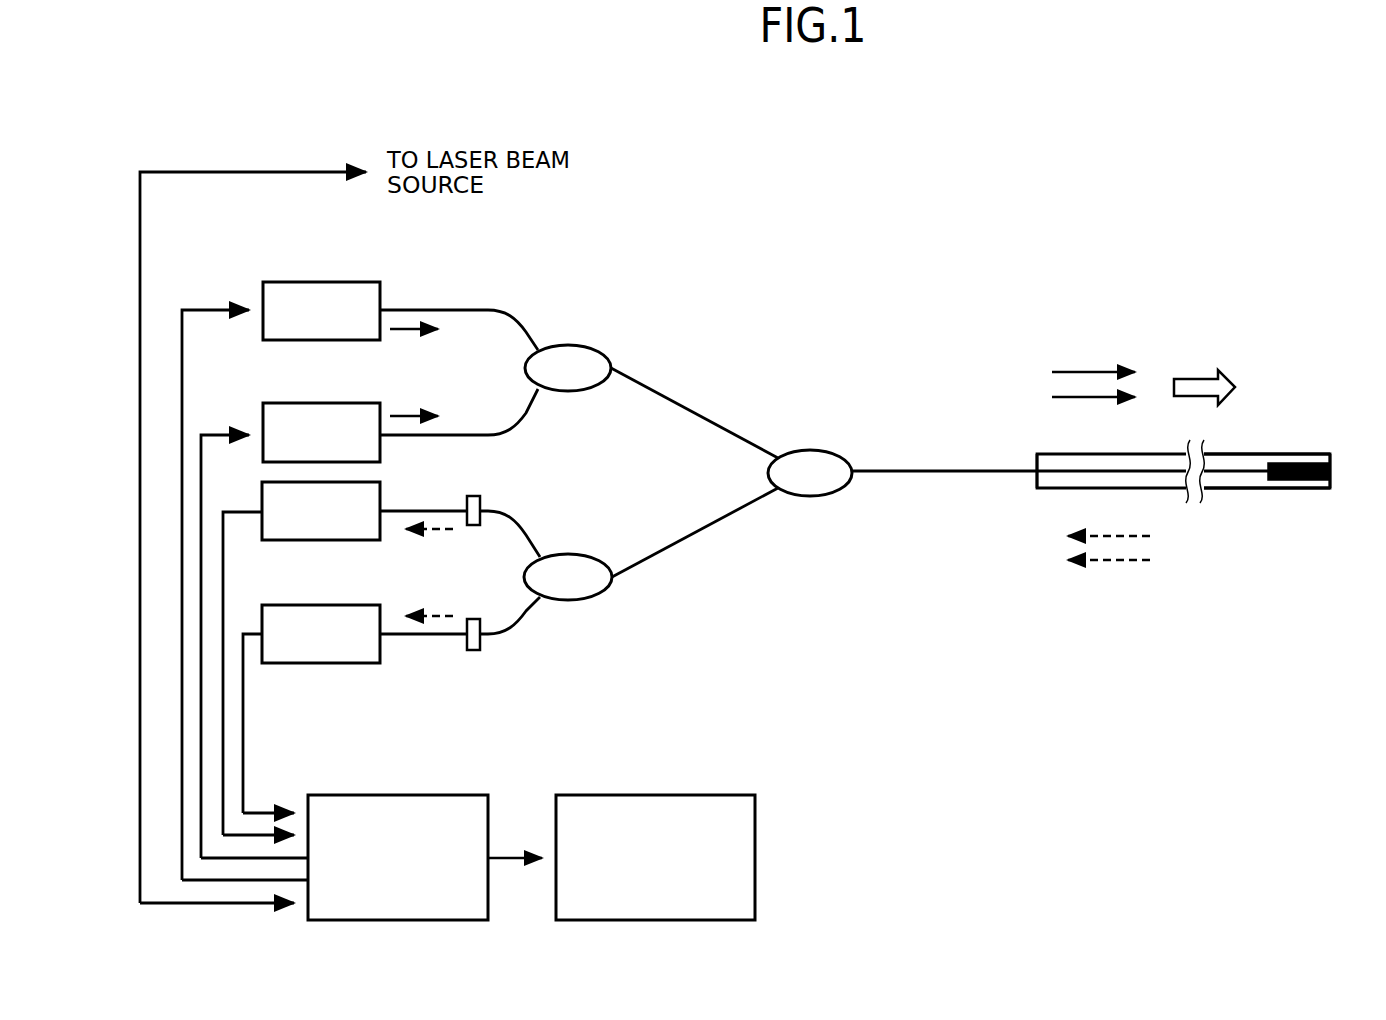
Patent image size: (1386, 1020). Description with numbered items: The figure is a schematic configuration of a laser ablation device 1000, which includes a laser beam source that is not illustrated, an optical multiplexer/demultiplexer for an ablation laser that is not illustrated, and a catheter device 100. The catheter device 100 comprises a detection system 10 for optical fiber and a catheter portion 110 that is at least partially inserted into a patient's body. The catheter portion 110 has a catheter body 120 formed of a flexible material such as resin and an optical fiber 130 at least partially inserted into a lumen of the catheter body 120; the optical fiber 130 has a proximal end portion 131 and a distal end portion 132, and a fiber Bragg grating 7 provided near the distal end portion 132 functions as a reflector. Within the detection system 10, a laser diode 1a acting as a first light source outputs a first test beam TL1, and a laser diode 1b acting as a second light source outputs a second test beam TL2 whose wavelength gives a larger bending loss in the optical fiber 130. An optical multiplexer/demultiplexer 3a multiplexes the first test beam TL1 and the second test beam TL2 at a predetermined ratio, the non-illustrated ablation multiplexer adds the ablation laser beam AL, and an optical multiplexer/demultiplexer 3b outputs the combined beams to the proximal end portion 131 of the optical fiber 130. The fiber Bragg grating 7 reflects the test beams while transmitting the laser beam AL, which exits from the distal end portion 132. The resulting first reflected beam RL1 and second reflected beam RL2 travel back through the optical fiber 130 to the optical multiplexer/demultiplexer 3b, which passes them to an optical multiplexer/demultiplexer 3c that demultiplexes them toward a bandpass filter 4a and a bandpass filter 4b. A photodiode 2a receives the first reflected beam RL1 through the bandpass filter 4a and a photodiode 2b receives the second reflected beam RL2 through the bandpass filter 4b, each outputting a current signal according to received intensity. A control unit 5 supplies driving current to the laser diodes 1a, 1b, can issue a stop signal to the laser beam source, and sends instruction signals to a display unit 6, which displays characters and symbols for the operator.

The laser ablation device 1000 is at (1091, 134).
The catheter device 100 is at (1163, 456).
The detection system 10 is at (968, 580).
The laser diode 1a is at (330, 280).
The LD 1b is at (330, 402).
The photodiode 2a is at (330, 541).
The PD 2b is at (330, 664).
The optical multiplexer/demultiplexer 3a is at (572, 346).
The optical multiplexer/demultiplexer 3b is at (815, 451).
The optical multiplexer/demultiplexer 3c is at (572, 555).
The bandpass filter 4a is at (478, 496).
The bandpass filter 4b is at (478, 651).
The control unit 5 is at (440, 794).
The display unit 6 is at (706, 794).
The fiber Bragg grating 7 is at (1290, 462).
The catheter portion 110 is at (1246, 580).
The catheter body 120 is at (1228, 490).
The optical fiber 130 is at (1234, 466).
The proximal end portion 131 is at (1020, 496).
The distal end portion 132 is at (1268, 496).
The first test beam TL1 is at (405, 333).
The second test beam TL2 is at (405, 413).
The first reflected beam RL1 is at (425, 534).
The second reflected beam RL2 is at (425, 611).
The ablation laser beam AL is at (1193, 378).